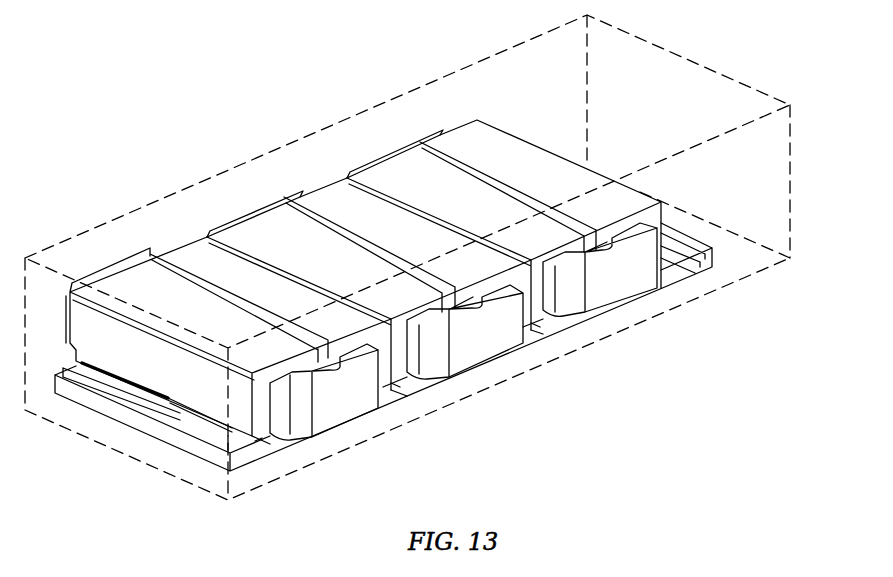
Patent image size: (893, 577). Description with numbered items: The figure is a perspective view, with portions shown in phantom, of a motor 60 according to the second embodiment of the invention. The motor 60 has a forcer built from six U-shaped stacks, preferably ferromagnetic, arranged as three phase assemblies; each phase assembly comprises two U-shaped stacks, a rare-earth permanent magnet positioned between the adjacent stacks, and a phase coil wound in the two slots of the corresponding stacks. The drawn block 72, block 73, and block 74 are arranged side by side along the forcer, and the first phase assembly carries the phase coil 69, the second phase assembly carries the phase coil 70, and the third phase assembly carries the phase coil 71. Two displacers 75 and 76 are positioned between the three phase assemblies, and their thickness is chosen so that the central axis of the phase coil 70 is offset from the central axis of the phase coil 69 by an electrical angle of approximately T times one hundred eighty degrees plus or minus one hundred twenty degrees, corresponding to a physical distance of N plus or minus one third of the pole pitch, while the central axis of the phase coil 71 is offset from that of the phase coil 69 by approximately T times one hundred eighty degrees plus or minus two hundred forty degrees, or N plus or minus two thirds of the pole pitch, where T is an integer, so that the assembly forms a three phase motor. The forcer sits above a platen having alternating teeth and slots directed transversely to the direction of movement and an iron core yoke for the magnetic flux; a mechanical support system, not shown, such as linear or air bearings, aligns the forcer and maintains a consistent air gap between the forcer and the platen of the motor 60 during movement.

The motor 60 is at (730, 107).
The phase coil 69 is at (347, 387).
The phase coil 70 is at (484, 345).
The phase coil 71 is at (622, 275).
The first block 72 is at (235, 313).
The second block 73 is at (381, 256).
The third block 74 is at (516, 203).
The displacer 75 is at (213, 232).
The displacer 76 is at (352, 171).